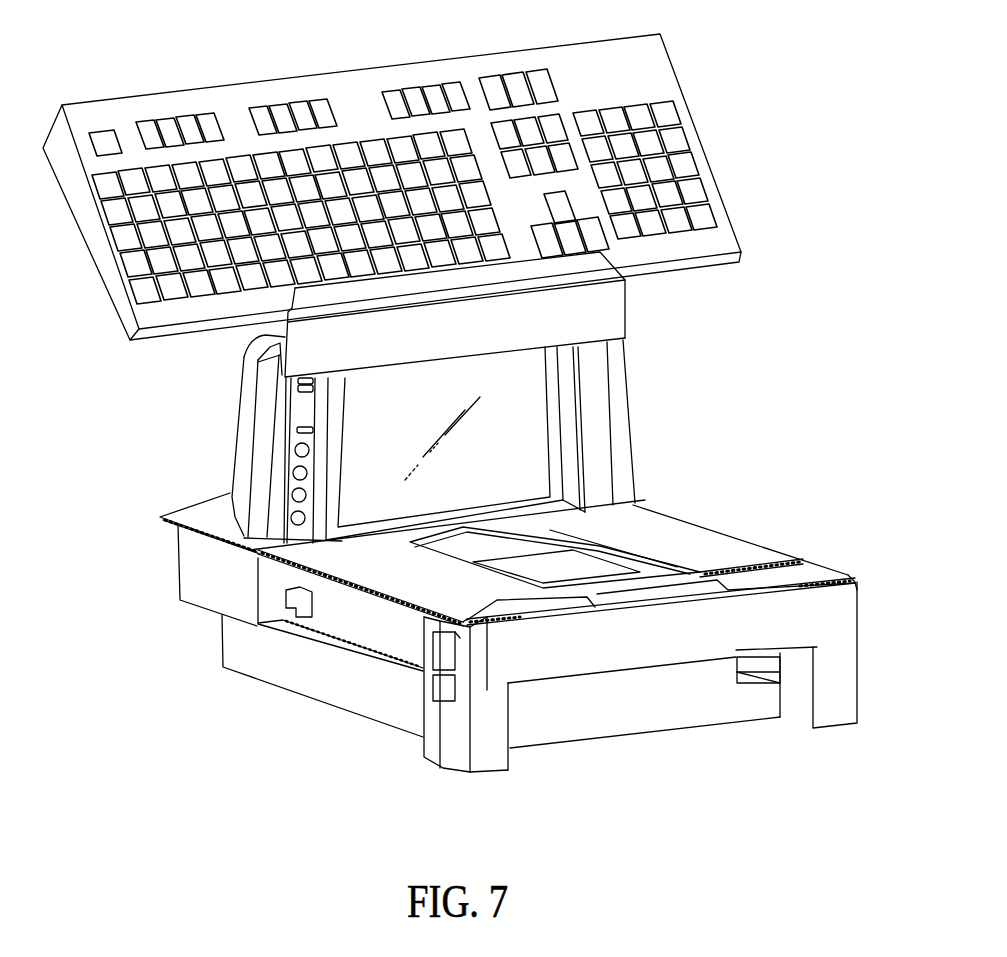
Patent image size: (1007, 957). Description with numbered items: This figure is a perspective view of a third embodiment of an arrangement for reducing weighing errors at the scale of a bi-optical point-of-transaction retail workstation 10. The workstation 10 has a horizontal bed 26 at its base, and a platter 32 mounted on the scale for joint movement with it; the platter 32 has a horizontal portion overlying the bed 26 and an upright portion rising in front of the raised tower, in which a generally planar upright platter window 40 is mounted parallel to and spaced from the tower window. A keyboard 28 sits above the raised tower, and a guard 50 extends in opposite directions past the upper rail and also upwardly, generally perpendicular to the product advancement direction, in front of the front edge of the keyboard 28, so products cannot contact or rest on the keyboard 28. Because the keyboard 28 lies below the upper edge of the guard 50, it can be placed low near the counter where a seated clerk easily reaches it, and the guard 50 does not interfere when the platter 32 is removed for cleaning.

The workstation 10 is at (192, 458).
The horizontal bed 26 is at (703, 535).
The keyboard 28 is at (360, 70).
The platter 32 is at (625, 422).
The upright platter window 40 is at (365, 503).
The guard 50 is at (632, 285).